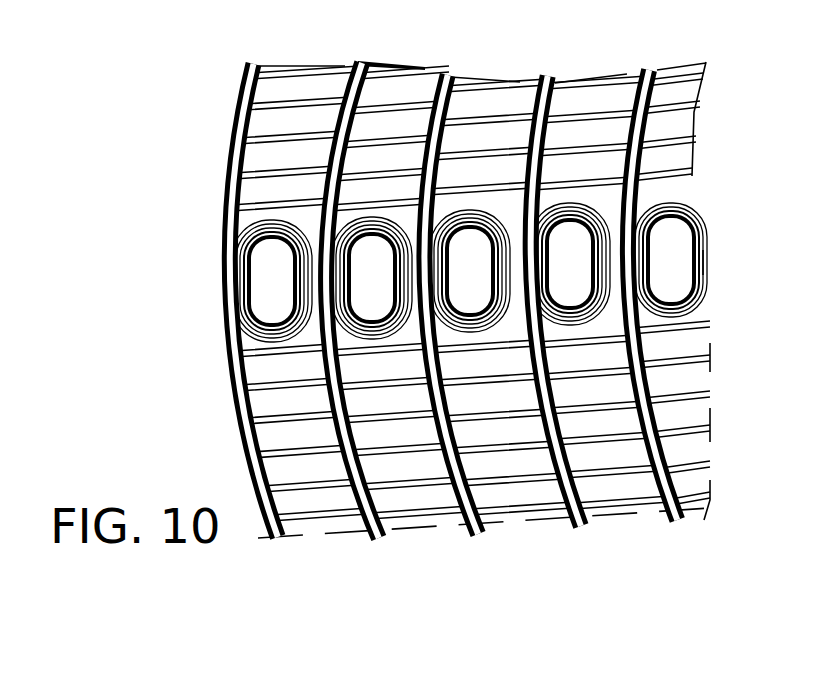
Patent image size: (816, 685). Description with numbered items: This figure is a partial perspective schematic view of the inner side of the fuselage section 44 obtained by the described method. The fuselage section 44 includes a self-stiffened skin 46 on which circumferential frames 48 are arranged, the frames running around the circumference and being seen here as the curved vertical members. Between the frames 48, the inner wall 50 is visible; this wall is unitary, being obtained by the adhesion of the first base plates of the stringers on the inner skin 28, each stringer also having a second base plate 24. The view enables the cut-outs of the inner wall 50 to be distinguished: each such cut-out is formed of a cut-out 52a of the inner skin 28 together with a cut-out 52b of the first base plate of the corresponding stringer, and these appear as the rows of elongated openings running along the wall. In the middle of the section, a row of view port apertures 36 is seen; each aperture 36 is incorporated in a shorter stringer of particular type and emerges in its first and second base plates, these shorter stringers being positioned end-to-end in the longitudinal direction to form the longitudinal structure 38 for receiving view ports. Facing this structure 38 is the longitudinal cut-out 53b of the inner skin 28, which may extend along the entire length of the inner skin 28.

The fuselage section 44 is at (147, 144).
The self-stiffened skin 46 is at (328, 540).
The circumferential frames 48 is at (379, 535).
The longitudinal cut-out of inner skin 53b is at (242, 222).
The inner wall 50 is at (387, 387).
The inner skin 28 is at (305, 376).
The second base plate 24 is at (263, 413).
The cut-out of inner skin 52a is at (267, 440).
The cut-out of first base plate 52b is at (260, 456).
The view port aperture 36 is at (238, 234).
The longitudinal structure for receiving view ports 38 is at (240, 342).